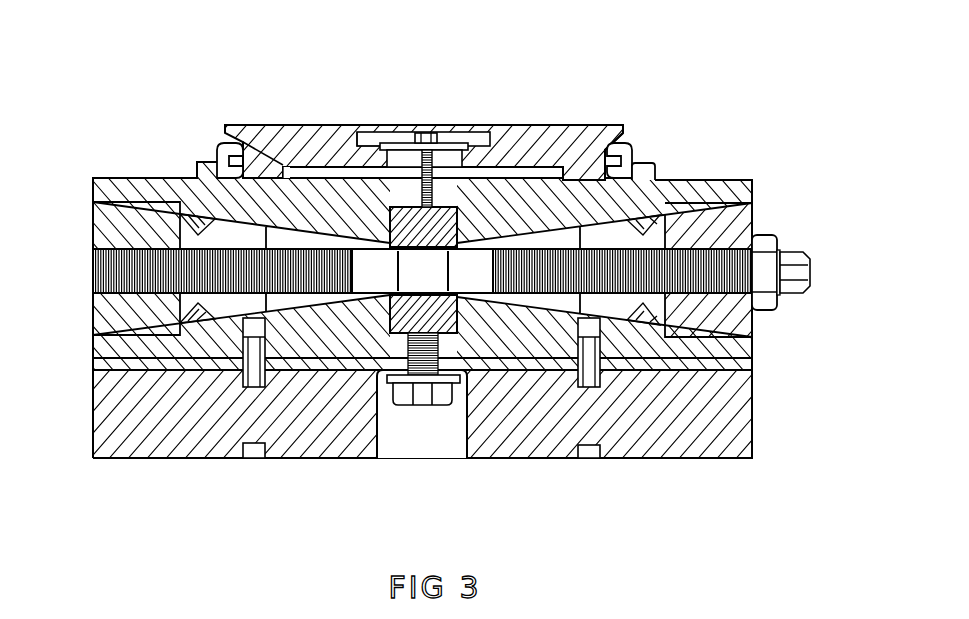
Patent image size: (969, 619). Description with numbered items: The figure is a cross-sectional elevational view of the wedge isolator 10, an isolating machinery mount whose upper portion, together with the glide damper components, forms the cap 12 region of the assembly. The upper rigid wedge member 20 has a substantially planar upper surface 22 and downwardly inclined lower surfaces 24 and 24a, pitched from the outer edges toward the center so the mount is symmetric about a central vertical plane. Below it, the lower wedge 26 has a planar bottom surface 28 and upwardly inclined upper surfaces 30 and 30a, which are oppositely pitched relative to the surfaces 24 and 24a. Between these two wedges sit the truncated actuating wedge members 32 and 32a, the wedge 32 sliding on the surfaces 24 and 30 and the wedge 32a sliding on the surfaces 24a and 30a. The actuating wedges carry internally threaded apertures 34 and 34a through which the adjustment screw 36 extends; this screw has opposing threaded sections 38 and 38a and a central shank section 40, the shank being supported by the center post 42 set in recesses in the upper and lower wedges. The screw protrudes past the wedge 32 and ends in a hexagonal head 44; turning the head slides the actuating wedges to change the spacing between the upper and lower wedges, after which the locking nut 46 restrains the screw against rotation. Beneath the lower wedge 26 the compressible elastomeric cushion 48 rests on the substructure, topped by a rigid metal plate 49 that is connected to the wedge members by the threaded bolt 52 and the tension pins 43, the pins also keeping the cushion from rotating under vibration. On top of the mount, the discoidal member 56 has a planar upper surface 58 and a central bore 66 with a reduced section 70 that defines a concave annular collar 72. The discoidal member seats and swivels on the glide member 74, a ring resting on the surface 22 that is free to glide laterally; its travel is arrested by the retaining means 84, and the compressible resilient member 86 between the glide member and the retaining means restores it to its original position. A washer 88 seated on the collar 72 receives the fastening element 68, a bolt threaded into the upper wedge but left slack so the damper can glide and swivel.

The wedge isolator 10 is at (735, 160).
The cap 12 is at (210, 118).
The upper rigid wedge member 20 is at (755, 187).
The planar upper surface 22 is at (302, 177).
The inclined lower surface 24 is at (752, 203).
The inclined lower surface 24a is at (175, 197).
The lower wedge 26 is at (93, 350).
The planar bottom surface 28 is at (93, 420).
The inclined upper surface 30 is at (658, 362).
The inclined upper surface 30a is at (187, 373).
The actuating wedge member 32 is at (752, 230).
The actuating wedge member 32a is at (93, 217).
The internally threaded aperture 34 is at (733, 295).
The internally threaded aperture 34a is at (108, 268).
The adjustment screw 36 is at (777, 292).
The threaded section 38 is at (548, 340).
The threaded section 38a is at (297, 293).
The central shank section 40 is at (355, 293).
The center post 42 is at (367, 293).
The tension pins 43 is at (598, 390).
The hexagonal head 44 is at (800, 294).
The locking nut 46 is at (770, 312).
The elastomeric cushion 48 is at (143, 458).
The rigid metal plate 49 is at (725, 363).
The threaded bolt 52 is at (413, 405).
The discoidal member 56 is at (597, 133).
The planar upper surface 58 is at (520, 127).
The bore 66 is at (373, 130).
The fastening element 68 is at (420, 133).
The reduced section 70 is at (402, 152).
The annular collar 72 is at (478, 147).
The glide member 74 is at (625, 140).
The retaining means 84 is at (655, 173).
The compressible resilient member 86 is at (220, 150).
The washer 88 is at (458, 143).